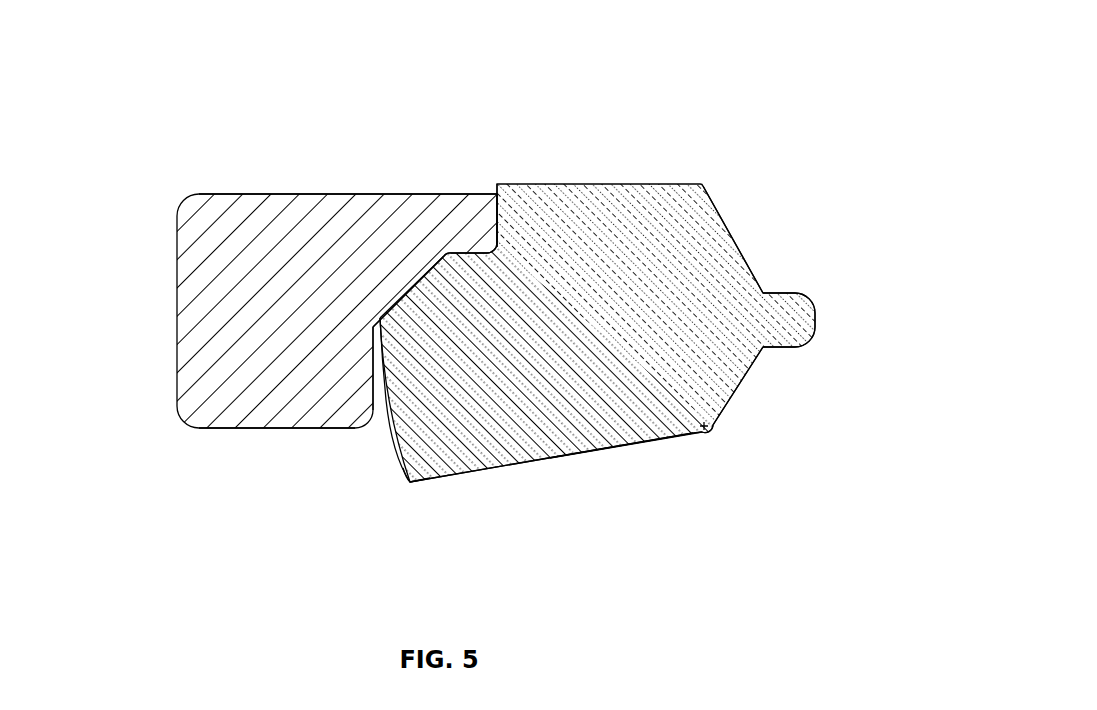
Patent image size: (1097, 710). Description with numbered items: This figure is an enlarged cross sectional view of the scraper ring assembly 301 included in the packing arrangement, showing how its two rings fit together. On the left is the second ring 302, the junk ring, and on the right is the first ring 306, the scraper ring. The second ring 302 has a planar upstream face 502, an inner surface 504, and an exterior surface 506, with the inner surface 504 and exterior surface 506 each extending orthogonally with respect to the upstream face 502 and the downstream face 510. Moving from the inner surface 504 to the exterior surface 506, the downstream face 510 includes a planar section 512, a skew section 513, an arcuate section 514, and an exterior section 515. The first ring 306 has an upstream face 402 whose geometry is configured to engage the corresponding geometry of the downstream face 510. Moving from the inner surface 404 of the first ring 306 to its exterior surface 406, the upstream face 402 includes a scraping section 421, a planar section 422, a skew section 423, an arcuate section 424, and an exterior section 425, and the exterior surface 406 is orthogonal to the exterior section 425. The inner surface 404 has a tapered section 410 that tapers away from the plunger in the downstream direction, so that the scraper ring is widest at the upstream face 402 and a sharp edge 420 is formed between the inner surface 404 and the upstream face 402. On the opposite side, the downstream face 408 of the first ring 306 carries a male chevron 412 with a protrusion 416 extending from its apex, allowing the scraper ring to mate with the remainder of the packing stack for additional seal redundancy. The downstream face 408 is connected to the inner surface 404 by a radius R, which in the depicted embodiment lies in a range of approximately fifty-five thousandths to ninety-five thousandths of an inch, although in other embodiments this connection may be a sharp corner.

The scraper ring assembly 301 is at (390, 118).
The second ring 302 is at (157, 158).
The first ring 306 is at (647, 497).
The upstream face 402 is at (474, 323).
The inner surface 404 is at (598, 503).
The exterior surface 406 is at (573, 184).
The downstream face 408 is at (787, 268).
The tapered section 410 is at (505, 468).
The male chevron 412 is at (740, 242).
The protrusion 416 is at (802, 318).
The sharp edge 420 is at (408, 483).
The scraping section 421 is at (396, 441).
The planar section 422 is at (392, 355).
The skew section 423 is at (433, 279).
The arcuate section 424 is at (494, 250).
The exterior section 425 is at (498, 203).
The upstream face 502 is at (175, 282).
The inner surface 504 is at (263, 428).
The exterior surface 506 is at (317, 190).
The downstream face 510 is at (333, 315).
The planar section 512 is at (370, 383).
The skew section 513 is at (404, 288).
The arcuate section 514 is at (468, 243).
The exterior section 515 is at (492, 205).
The radius R is at (747, 468).